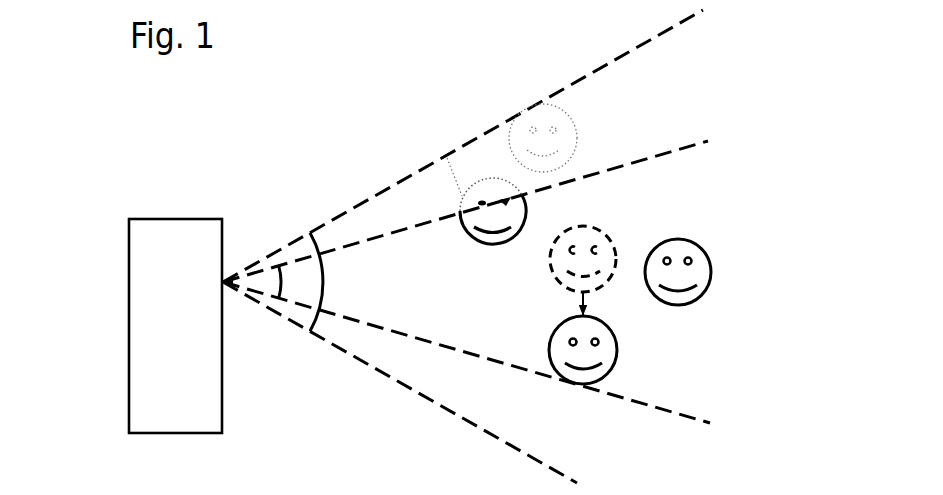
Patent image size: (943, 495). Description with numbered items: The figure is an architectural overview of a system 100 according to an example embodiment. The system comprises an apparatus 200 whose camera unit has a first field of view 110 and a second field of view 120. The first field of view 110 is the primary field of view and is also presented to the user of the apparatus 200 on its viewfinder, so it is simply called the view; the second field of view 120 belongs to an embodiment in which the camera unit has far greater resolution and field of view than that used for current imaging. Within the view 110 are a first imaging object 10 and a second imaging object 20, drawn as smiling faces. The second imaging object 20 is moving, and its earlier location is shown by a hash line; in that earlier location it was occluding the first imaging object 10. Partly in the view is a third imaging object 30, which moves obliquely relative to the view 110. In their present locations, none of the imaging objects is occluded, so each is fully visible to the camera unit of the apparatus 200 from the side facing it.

The system 100 is at (178, 110).
The apparatus 200 is at (175, 326).
The first field of view 110 is at (279, 266).
The second field of view 120 is at (311, 331).
The first imaging object 10 is at (707, 258).
The second imaging object 20 is at (647, 305).
The third imaging object 30 is at (482, 173).